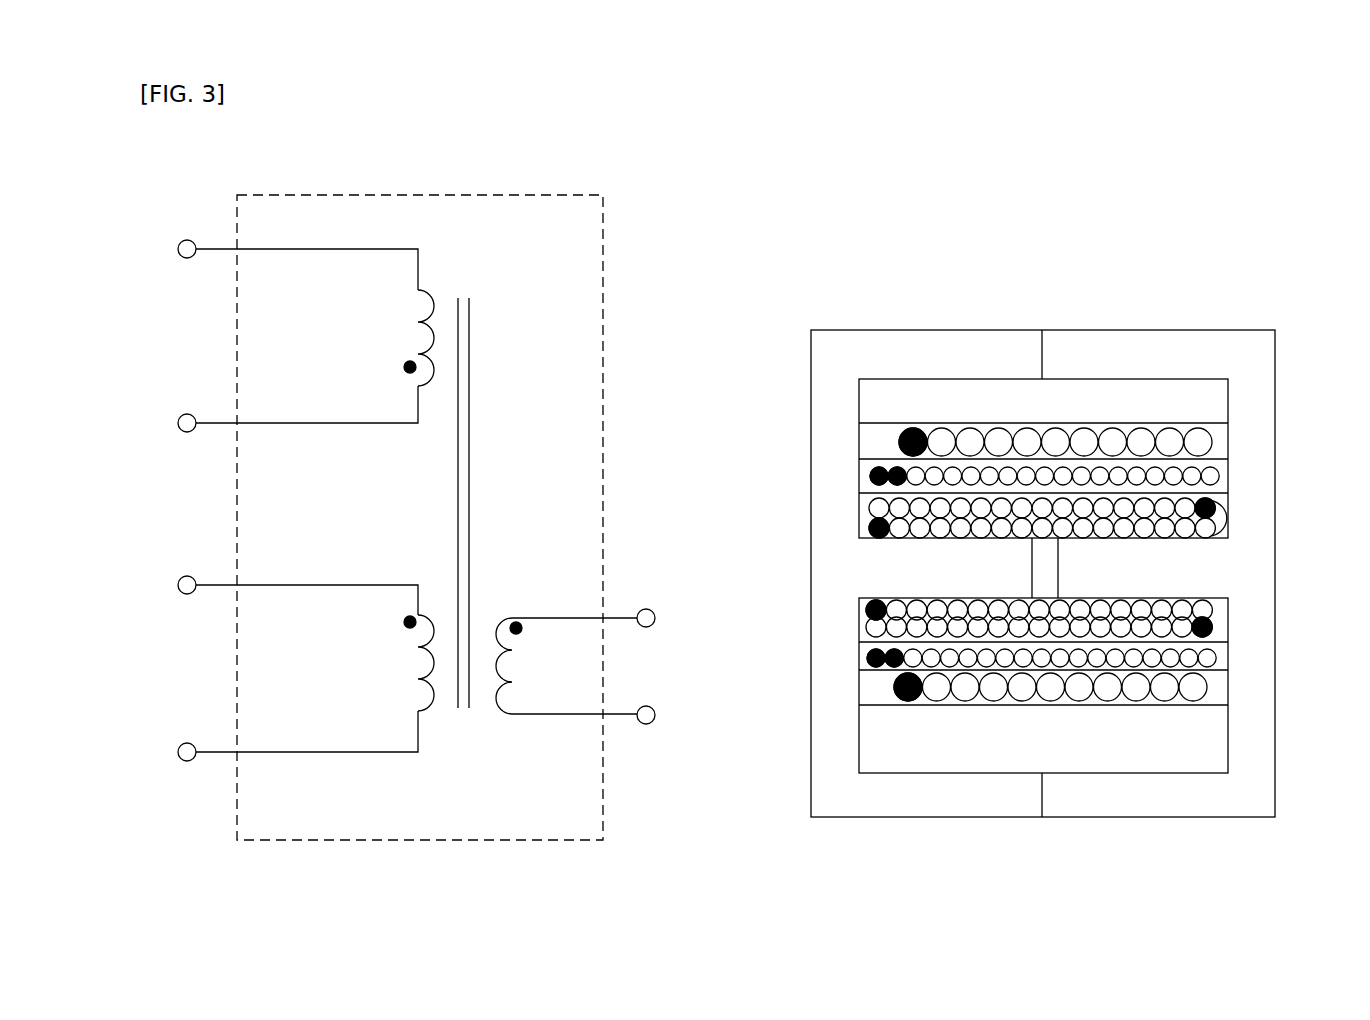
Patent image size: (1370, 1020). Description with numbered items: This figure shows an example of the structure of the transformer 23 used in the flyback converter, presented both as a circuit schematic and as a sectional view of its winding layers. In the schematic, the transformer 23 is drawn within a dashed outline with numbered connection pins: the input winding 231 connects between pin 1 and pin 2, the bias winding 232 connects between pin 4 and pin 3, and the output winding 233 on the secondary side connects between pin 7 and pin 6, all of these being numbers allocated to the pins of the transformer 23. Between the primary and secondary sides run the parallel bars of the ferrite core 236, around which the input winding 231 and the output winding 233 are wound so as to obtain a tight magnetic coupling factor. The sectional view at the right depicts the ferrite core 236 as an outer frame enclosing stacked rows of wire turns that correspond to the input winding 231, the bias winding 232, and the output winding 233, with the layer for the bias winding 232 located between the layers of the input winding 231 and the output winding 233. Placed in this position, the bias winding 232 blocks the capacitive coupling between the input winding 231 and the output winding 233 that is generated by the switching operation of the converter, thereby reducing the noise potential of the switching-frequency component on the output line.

The transformer 23 is at (237, 195).
The input winding 231 is at (402, 327).
The bias winding 232 is at (413, 649).
The output winding 233 is at (516, 652).
The ferrite core 236 is at (458, 727).
The pin 1 is at (879, 509).
The pin 2 is at (879, 529).
The pin 3 is at (1305, 476).
The pin 4 is at (879, 476).
The pin 6 is at (1305, 442).
The pin 7 is at (913, 443).